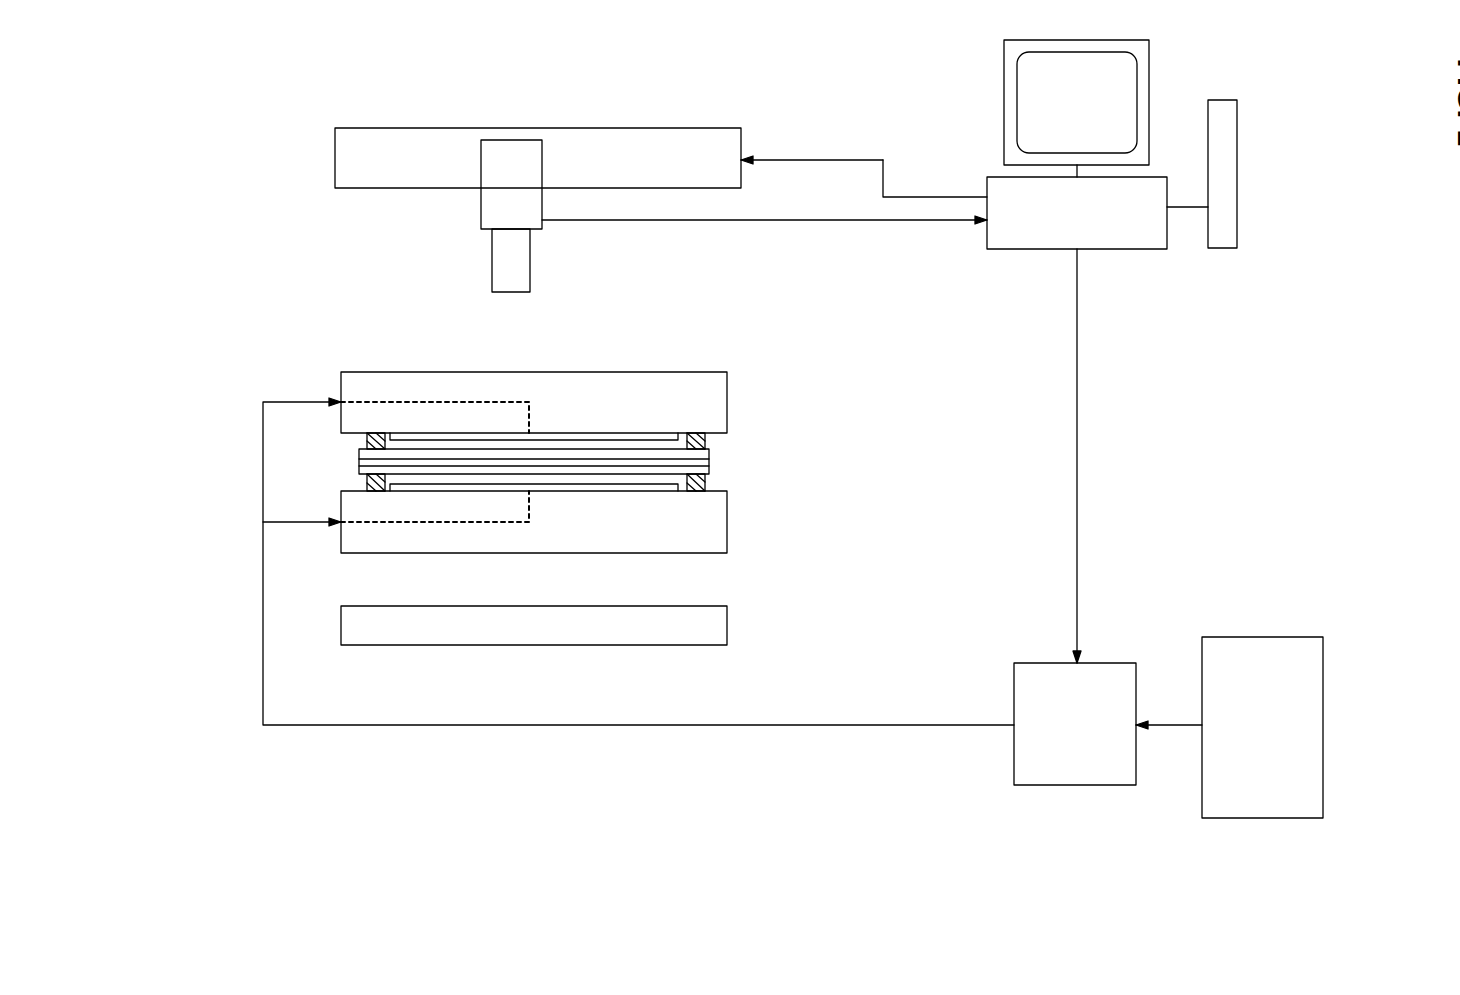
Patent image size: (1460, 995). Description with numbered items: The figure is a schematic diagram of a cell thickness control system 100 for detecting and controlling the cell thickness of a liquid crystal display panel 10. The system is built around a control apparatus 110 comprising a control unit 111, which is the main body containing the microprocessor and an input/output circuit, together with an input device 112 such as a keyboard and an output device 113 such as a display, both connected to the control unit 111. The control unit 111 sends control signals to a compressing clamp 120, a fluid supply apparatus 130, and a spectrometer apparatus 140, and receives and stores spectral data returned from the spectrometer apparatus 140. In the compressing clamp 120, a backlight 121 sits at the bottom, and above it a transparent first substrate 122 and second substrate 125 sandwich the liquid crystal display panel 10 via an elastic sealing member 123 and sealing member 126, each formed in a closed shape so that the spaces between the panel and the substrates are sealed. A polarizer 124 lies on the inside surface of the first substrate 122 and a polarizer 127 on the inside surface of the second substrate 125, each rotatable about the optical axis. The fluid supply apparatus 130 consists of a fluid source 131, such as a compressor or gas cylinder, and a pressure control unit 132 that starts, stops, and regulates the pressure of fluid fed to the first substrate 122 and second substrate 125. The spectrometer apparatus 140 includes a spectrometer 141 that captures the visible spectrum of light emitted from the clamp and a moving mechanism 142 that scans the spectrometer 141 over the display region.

The liquid crystal display panel 10 is at (709, 462).
The cell thickness control system 100 is at (912, 366).
The control apparatus 110 is at (1226, 325).
The control unit 111 is at (1022, 249).
The input device 112 is at (1237, 172).
The output device 113 is at (1004, 92).
The compressing clamp 120 is at (263, 302).
The backlight 121 is at (727, 622).
The first substrate 122 is at (727, 532).
The sealing member 123 is at (705, 484).
The polarizer 124 is at (405, 486).
The second substrate 125 is at (655, 372).
The sealing member 126 is at (367, 442).
The polarizer 127 is at (436, 432).
The fluid supply apparatus 130 is at (1189, 553).
The fluid source 131 is at (1323, 662).
The pressure control unit 132 is at (1014, 683).
The spectrometer apparatus 140 is at (296, 80).
The spectrometer 141 is at (481, 214).
The moving mechanism 142 is at (580, 127).